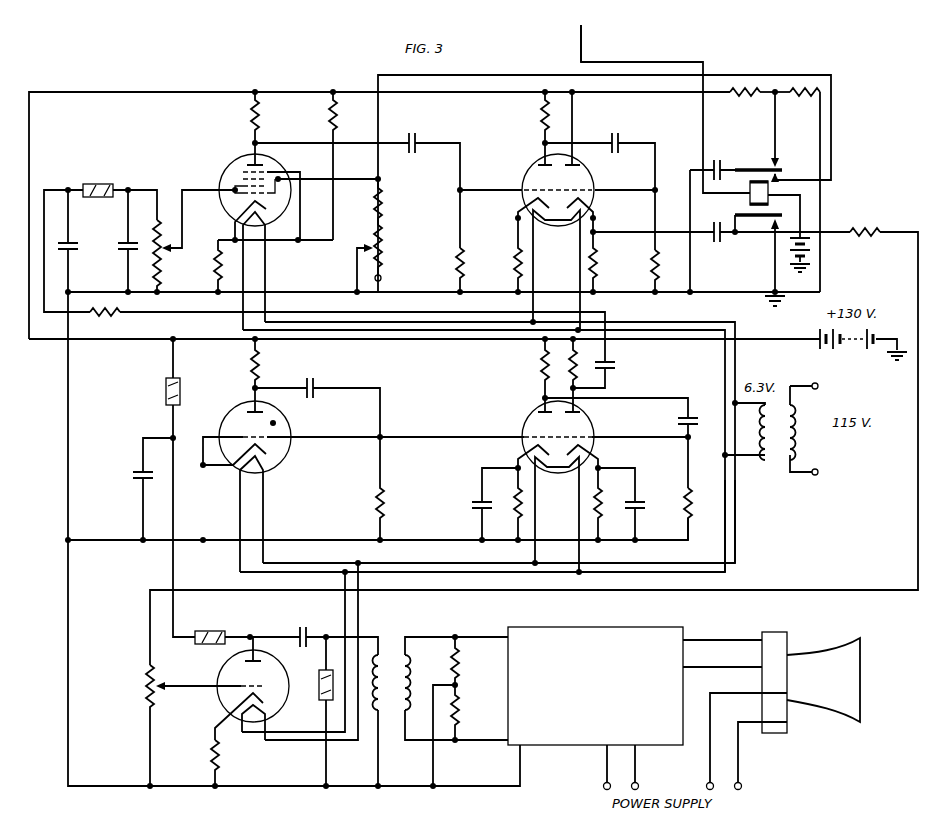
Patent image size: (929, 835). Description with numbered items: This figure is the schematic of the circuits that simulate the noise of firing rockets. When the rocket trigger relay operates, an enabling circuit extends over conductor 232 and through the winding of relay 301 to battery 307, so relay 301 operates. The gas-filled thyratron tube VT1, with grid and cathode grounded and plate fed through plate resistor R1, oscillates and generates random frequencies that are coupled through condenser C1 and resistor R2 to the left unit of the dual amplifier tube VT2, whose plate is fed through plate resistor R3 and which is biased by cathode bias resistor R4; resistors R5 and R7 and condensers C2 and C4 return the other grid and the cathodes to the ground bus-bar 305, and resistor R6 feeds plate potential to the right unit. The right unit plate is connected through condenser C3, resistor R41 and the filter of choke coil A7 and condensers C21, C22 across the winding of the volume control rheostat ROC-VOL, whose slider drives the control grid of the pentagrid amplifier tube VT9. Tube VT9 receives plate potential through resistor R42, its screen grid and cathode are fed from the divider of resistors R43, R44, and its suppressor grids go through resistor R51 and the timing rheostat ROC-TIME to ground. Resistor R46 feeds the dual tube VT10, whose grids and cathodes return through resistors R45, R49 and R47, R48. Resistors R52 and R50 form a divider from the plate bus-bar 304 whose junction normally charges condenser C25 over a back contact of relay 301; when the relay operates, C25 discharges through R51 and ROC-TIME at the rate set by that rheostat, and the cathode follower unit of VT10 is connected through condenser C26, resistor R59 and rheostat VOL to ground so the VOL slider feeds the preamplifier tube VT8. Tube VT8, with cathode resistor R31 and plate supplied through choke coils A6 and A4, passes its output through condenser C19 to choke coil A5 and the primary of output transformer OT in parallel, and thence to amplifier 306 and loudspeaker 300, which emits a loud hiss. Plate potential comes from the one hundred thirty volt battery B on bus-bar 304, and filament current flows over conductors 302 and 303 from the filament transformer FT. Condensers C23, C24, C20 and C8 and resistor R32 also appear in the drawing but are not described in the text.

The conductor 232 is at (581, 40).
The choke coil A7 is at (100, 187).
The pentagrid amplifier tube VT9 is at (241, 166).
The resistor R42 is at (250, 116).
The potential divider resistor R44 is at (330, 116).
The capacitor C23 is at (413, 134).
The resistor R46 is at (540, 116).
The dual amplifier tube VT10 is at (530, 168).
The capacitor C24 is at (617, 134).
The resistor R52 is at (742, 102).
The resistor R50 is at (808, 102).
The condenser C25 is at (722, 166).
The relay 301 is at (749, 197).
The battery 307 is at (812, 256).
The resistor R59 is at (858, 227).
The condenser C21 is at (78, 242).
The condenser C22 is at (120, 250).
The volume control rheostat ROC-VOL is at (168, 253).
The potential divider resistor R43 is at (230, 268).
The resistor R51 is at (384, 201).
The timing rheostat ROC-TIME is at (384, 250).
The resistor R45 is at (455, 268).
The resistor R47 is at (512, 264).
The resistor R48 is at (600, 256).
The resistor R49 is at (650, 268).
The condenser C26 is at (722, 243).
The ground bus-bar 305 is at (380, 295).
The resistor R41 is at (109, 316).
The choke coil A6 is at (164, 392).
The capacitor C20 is at (133, 477).
The plate resistor R1 is at (262, 360).
The coupling condenser C1 is at (312, 378).
The thyratron tube VT1 is at (292, 444).
The resistor R2 is at (375, 507).
The condenser C2 is at (470, 507).
The cathode bias resistor R4 is at (515, 506).
The resistor R7 is at (593, 509).
The plate resistor R3 is at (540, 363).
The resistor R6 is at (582, 385).
The capacitor C8 is at (626, 365).
The dual amplifier tube VT2 is at (526, 410).
The coupling condenser C3 is at (693, 421).
The resistor R5 is at (683, 488).
The condenser C4 is at (645, 508).
The plate supply bus-bar 304 is at (758, 340).
The battery B is at (843, 349).
The filament supply transformer FT is at (785, 462).
The filament supply conductor 302 is at (737, 517).
The filament supply conductor 303 is at (727, 538).
The choke coil A4 is at (204, 632).
The condenser C19 is at (312, 627).
The output transformer OT is at (392, 650).
The volume rheostat VOL is at (143, 687).
The preamplifier tube VT8 is at (226, 661).
The choke coil A5 is at (318, 687).
The resistor R31 is at (230, 749).
The resistor R32 is at (463, 706).
The amplifier 306 is at (617, 627).
The loudspeaker 300 is at (850, 673).